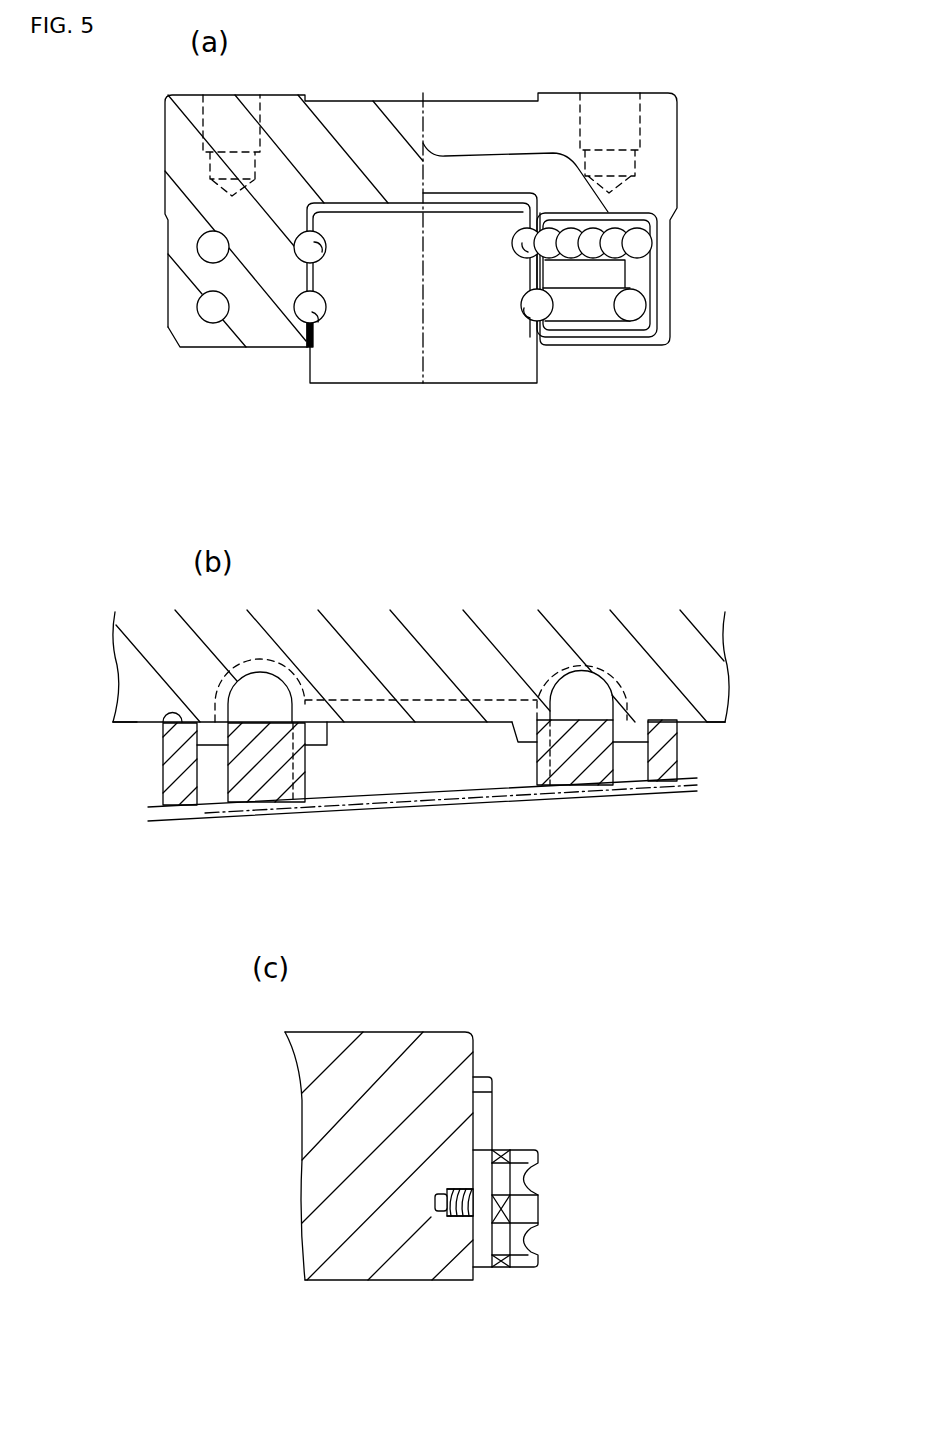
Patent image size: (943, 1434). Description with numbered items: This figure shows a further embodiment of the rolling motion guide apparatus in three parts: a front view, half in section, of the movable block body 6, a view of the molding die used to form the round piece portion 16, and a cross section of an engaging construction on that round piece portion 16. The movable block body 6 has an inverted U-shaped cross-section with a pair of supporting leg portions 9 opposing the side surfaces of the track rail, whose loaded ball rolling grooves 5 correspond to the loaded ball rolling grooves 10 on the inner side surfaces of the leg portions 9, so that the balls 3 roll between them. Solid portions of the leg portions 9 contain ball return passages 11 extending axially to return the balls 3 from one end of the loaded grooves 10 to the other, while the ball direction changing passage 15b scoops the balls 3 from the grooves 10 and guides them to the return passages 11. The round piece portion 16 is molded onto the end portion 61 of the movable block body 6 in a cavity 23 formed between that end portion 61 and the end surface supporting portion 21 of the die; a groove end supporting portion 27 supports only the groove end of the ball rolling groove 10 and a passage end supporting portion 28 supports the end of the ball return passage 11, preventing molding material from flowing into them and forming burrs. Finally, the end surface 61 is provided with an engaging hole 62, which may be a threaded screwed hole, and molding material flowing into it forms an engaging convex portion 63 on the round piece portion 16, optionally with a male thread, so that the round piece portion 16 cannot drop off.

The balls 3 is at (310, 231).
The loaded ball rolling groove 5 is at (318, 250).
The movable block body 6 is at (397, 1057).
The supporting leg portion 9 is at (267, 790).
The loaded ball rolling groove 10 is at (295, 246).
The ball return passage 11 is at (197, 253).
The ball direction changing passage 15b is at (601, 232).
The round piece portion 16 is at (648, 212).
The end surface supporting portion 21 is at (137, 722).
The cavity 23 is at (590, 695).
The groove end supporting portion 27 is at (330, 748).
The passage end supporting portion 28 is at (210, 735).
The end portion of the movable block body 61 is at (492, 128).
The engaging hole 62 is at (455, 1213).
The engaging convex portion 63 is at (447, 1223).